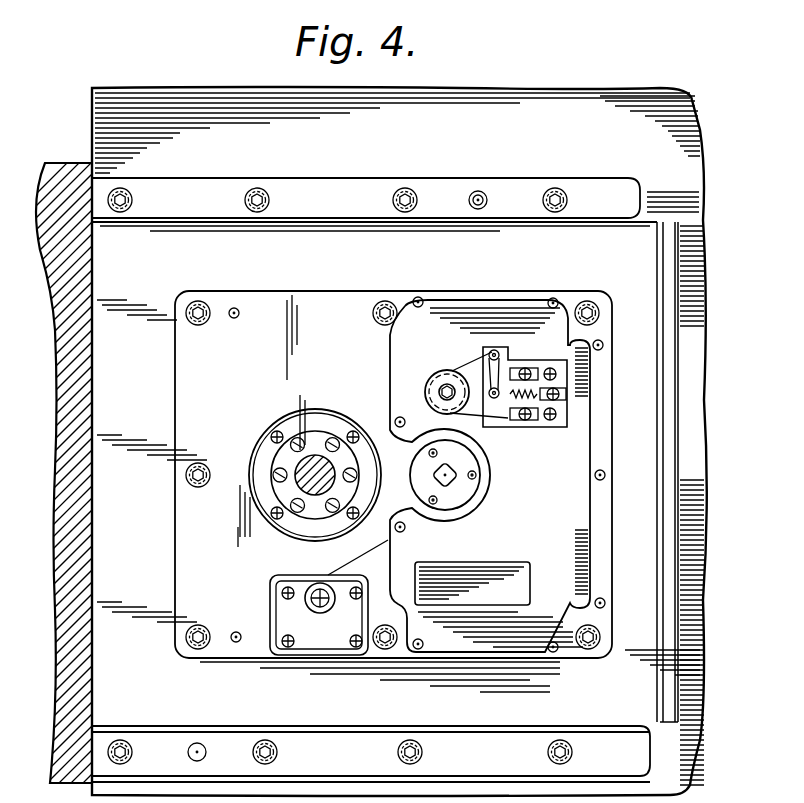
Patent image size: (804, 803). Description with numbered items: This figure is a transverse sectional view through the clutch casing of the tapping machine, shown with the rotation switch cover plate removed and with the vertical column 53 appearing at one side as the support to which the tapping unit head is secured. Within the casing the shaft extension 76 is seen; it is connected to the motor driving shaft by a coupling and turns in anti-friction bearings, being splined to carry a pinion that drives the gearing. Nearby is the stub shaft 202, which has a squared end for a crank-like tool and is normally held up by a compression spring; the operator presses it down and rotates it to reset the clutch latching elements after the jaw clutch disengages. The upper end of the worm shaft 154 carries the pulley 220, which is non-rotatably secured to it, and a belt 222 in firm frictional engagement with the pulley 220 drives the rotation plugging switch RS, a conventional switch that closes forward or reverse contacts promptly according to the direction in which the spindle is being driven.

The vertical column 53 is at (60, 323).
The shaft extension 76 is at (302, 465).
The worm shaft 154 is at (447, 392).
The stub shaft 202 is at (450, 482).
The pulley 220 is at (440, 380).
The belt 222 is at (481, 368).
The rotation plugging switch RS is at (562, 414).